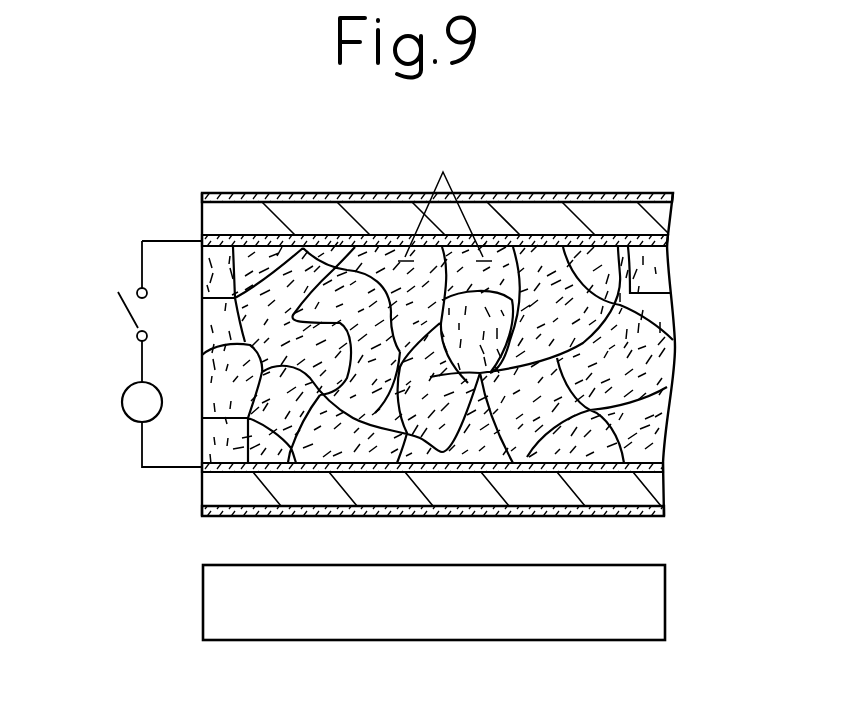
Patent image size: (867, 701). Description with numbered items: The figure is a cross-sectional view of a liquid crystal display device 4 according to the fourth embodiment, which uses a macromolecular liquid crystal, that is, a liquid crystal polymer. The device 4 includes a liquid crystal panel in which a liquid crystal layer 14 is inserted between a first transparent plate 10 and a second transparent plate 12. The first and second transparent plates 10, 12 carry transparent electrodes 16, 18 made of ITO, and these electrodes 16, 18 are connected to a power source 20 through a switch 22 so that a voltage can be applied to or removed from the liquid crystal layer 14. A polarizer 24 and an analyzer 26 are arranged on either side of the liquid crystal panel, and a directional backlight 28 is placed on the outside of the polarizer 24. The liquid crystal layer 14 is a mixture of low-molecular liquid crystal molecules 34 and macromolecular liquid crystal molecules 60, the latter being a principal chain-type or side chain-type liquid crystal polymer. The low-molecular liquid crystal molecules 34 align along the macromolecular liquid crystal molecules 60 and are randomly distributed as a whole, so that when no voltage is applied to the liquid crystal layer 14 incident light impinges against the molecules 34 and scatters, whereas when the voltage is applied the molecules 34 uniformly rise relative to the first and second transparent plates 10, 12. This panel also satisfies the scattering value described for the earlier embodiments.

The liquid crystal display device 4 is at (588, 118).
The first transparent plate 10 is at (664, 483).
The second transparent plate 12 is at (663, 217).
The liquid crystal layer 14 is at (667, 408).
The transparent electrode 16 is at (205, 493).
The transparent electrode 18 is at (205, 224).
The power source 20 is at (122, 402).
The switch 22 is at (122, 314).
The polarizer 24 is at (650, 520).
The analyzer 26 is at (613, 193).
The directional backlight 28 is at (628, 628).
The low-molecular liquid crystal molecules 34 is at (443, 172).
The macromolecular liquid crystal molecules 60 is at (667, 283).